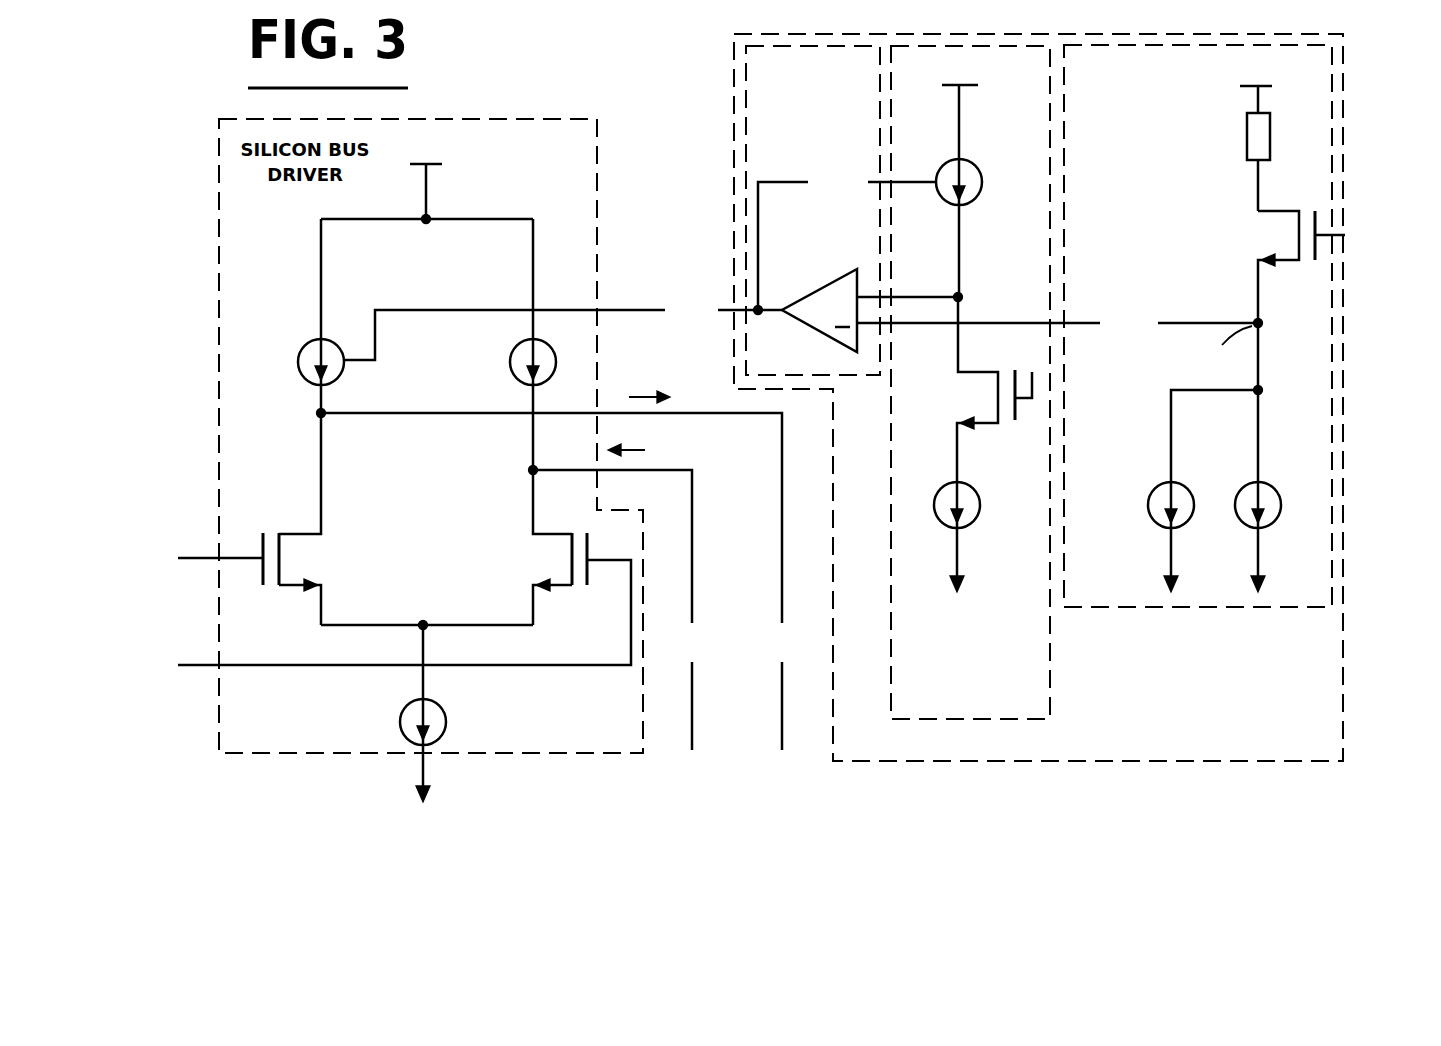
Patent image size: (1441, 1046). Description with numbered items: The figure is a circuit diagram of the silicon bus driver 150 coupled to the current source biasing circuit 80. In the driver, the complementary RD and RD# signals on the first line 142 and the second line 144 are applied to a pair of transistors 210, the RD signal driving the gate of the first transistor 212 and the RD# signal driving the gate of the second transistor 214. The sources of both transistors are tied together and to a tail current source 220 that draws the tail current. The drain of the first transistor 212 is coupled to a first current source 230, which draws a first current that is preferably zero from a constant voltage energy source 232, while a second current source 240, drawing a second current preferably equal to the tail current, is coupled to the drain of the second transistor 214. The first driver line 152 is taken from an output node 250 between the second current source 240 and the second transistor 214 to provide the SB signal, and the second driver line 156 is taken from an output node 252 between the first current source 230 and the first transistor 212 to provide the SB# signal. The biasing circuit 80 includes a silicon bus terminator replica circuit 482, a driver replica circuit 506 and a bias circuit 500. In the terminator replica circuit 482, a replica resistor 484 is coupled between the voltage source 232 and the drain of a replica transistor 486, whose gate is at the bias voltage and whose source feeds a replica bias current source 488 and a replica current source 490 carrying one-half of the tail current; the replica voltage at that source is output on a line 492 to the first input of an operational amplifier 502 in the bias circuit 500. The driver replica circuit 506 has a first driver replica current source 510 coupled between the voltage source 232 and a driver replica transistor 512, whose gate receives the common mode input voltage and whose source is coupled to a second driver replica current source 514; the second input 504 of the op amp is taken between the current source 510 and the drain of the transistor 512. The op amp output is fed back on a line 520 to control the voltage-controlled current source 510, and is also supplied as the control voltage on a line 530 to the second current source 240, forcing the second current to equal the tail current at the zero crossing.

The silicon bus driver 150 is at (535, 119).
The constant voltage energy source 232 is at (442, 164).
The first current source 230 is at (554, 352).
The second current source 240 is at (345, 378).
The output node 250 is at (325, 416).
The output node 252 is at (530, 476).
The pair of transistors 210 is at (425, 519).
The second transistor 214 is at (333, 563).
The first transistor 212 is at (530, 563).
The second line 144 is at (195, 565).
The first line 142 is at (216, 665).
The tail current source 220 is at (400, 712).
The second driver line 156 is at (631, 615).
The first driver line 152 is at (570, 589).
The line 530 is at (563, 314).
The bias circuit 500 is at (792, 84).
The line 520 is at (847, 240).
The operational amplifier 502 is at (828, 281).
The second input 504 is at (868, 297).
The first driver replica current source 510 is at (945, 166).
The driver replica transistor 512 is at (955, 390).
The second driver replica current source 514 is at (945, 487).
The driver replica circuit 506 is at (942, 631).
The silicon bus terminator replica circuit 482 is at (1131, 82).
The replica resistor 484 is at (1247, 137).
The replica transistor 486 is at (1255, 238).
The line 492 is at (1060, 342).
The replica bias current source 488 is at (1152, 488).
The replica current source 490 is at (1272, 488).
The current source biasing circuit 80 is at (1185, 697).